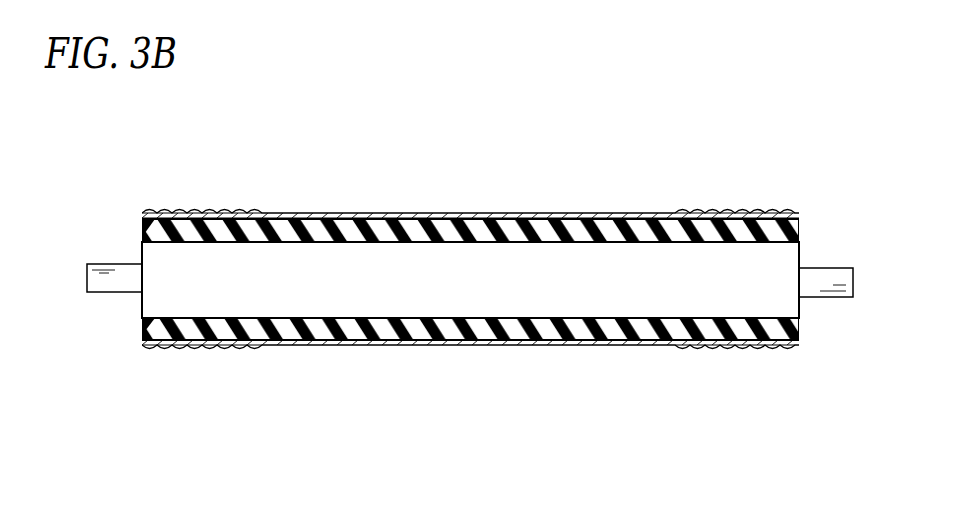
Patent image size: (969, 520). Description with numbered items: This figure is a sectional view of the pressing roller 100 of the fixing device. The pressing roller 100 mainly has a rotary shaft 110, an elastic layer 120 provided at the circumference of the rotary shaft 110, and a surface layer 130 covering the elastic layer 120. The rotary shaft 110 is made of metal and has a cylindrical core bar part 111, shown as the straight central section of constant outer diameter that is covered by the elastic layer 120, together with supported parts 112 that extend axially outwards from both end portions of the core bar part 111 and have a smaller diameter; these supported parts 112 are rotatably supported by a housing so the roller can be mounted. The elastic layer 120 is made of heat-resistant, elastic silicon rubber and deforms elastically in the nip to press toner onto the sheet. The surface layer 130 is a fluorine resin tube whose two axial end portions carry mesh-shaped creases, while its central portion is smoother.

The pressing roller 100 is at (546, 122).
The rotary shaft 110 is at (108, 254).
The core bar part 111 is at (450, 302).
The supported parts 112 is at (109, 283).
The elastic layer 120 is at (580, 227).
The surface layer 130 is at (384, 202).